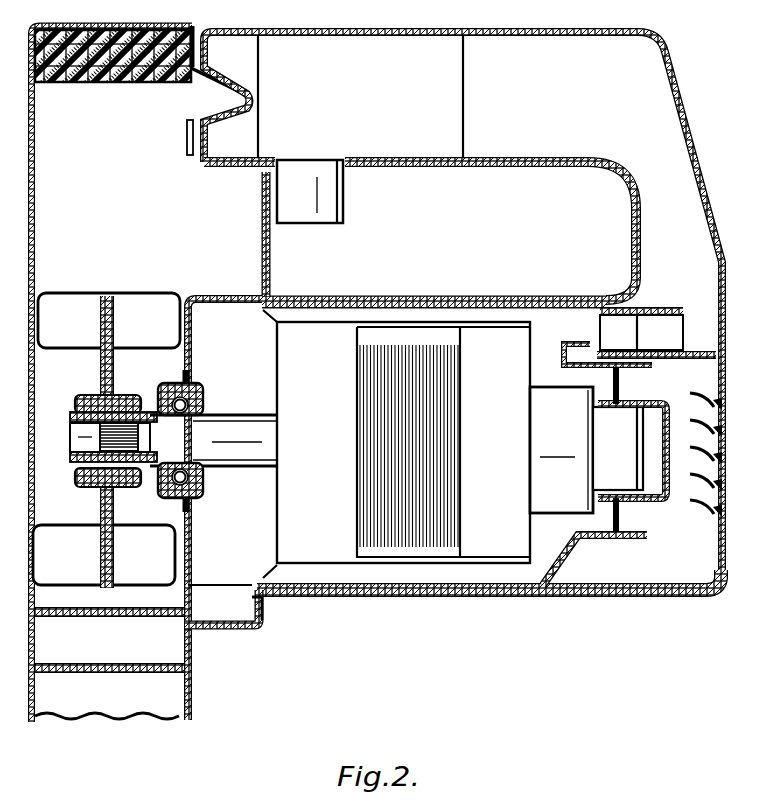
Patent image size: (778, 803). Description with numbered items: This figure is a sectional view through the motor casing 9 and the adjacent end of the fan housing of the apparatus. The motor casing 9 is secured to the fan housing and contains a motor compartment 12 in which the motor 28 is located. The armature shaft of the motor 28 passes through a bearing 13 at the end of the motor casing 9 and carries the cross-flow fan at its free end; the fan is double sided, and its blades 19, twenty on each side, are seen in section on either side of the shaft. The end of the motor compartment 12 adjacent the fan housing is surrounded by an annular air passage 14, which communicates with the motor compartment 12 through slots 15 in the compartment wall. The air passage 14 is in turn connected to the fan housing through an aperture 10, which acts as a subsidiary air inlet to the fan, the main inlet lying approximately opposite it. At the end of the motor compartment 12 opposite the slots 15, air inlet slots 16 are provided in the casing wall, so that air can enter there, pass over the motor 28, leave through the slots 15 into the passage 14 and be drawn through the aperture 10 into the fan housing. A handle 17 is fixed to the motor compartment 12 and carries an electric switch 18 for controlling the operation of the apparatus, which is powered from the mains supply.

The motor casing 9 is at (548, 590).
The aperture 10 is at (227, 183).
The motor compartment 12 is at (545, 537).
The bearing 13 is at (190, 477).
The annular air passage 14 is at (257, 246).
The slots 15 is at (235, 296).
The air inlet slots 16 is at (693, 410).
The handle 17 is at (565, 123).
The electric switch 18 is at (413, 133).
The blades 19 is at (133, 312).
The motor 28 is at (492, 518).